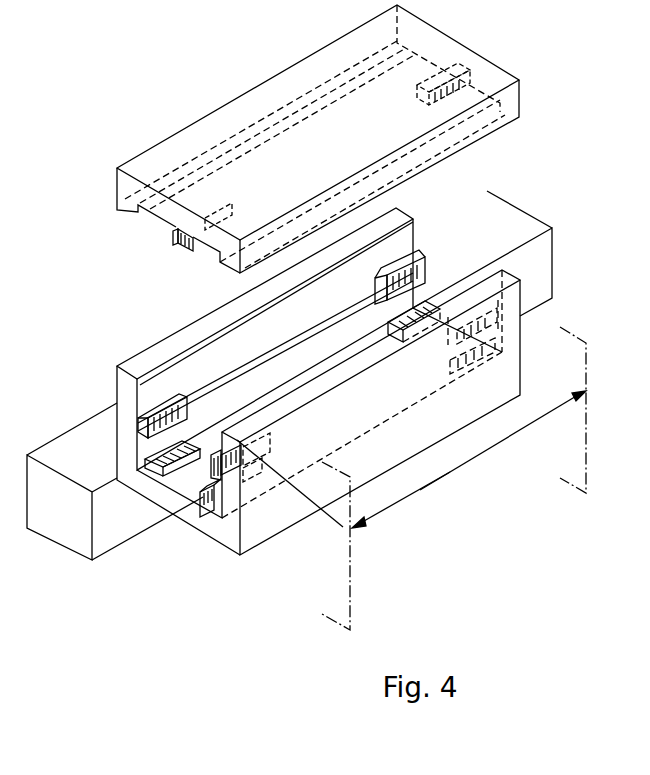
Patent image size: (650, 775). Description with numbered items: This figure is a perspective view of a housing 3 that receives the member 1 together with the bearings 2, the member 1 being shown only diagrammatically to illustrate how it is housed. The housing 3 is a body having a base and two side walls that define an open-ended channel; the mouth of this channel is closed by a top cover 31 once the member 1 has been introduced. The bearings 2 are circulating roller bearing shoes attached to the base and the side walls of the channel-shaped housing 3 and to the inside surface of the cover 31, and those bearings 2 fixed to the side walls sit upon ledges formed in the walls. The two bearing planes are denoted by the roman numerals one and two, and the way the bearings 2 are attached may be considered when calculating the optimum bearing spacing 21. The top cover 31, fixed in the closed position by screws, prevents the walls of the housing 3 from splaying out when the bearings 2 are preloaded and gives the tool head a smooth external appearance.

The member 1 is at (73, 528).
The bearings 2 is at (413, 260).
The housing 3 is at (257, 523).
The bearing spacing 21 is at (371, 412).
The top cover 31 is at (228, 118).